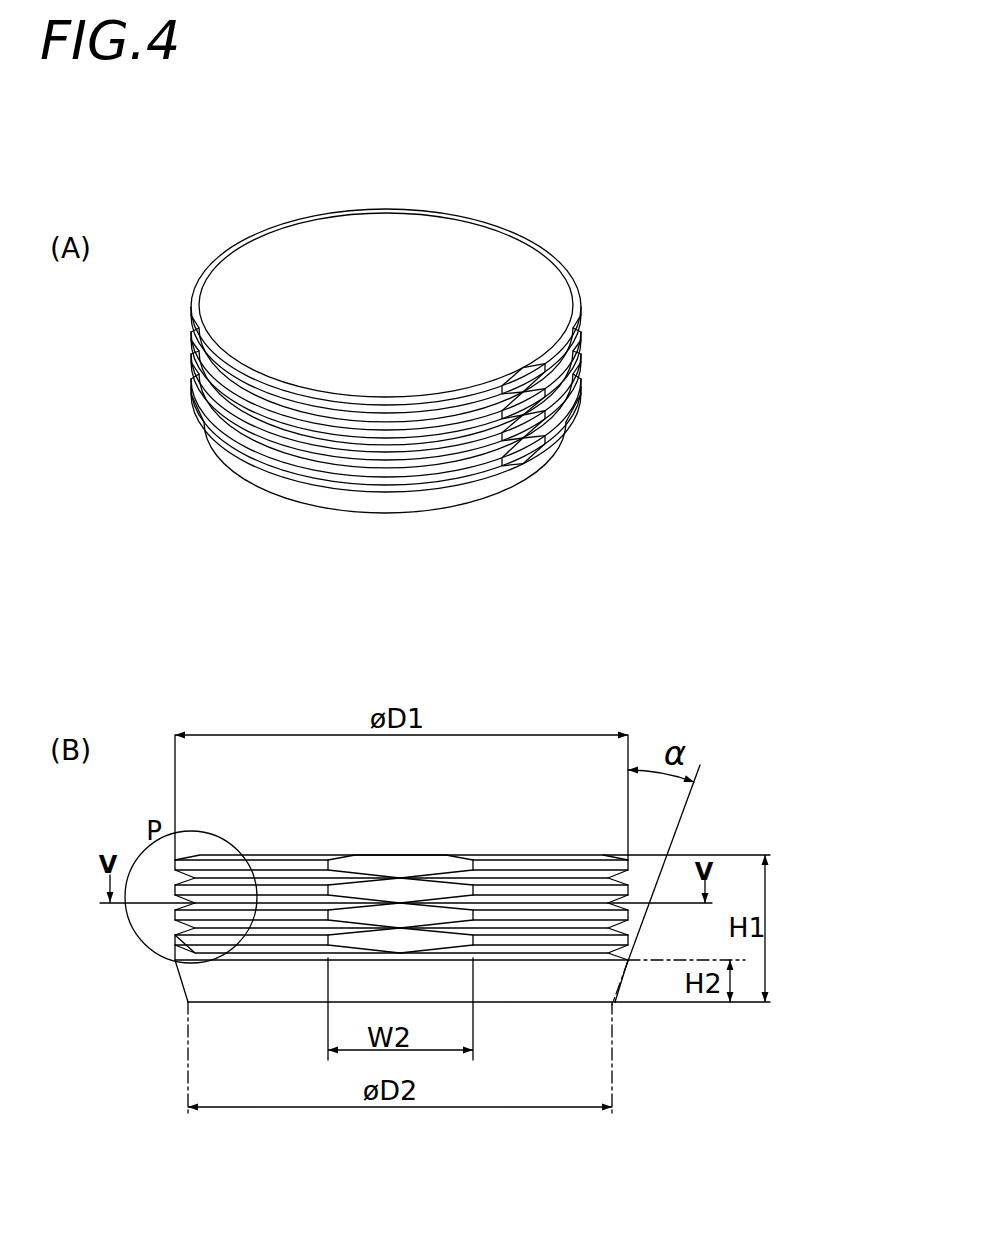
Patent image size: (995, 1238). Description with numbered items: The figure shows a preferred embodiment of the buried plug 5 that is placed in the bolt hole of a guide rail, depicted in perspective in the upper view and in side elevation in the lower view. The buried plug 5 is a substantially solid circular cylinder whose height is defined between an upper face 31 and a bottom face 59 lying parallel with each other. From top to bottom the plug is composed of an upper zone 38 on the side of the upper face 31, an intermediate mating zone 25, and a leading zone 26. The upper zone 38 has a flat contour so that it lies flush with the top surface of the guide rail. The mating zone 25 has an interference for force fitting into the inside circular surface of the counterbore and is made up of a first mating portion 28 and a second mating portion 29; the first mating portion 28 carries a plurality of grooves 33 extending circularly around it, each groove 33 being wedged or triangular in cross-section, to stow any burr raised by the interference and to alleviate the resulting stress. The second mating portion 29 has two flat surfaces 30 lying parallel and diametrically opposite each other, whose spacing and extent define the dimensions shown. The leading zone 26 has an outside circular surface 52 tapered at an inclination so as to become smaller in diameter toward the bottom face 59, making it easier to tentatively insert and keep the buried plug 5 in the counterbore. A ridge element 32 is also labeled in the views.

The buried plug 5 is at (489, 213).
The mating zone 25 is at (253, 410).
The leading zone 26 is at (297, 494).
The first mating portion 28 is at (417, 447).
The second mating portion 29 is at (527, 430).
The flat surface 30 is at (528, 405).
The upper face 31 is at (318, 250).
The upper thread ridge 32 is at (353, 468).
The groove 33 is at (187, 950).
The upper zone 38 is at (576, 305).
The outside circular surface 52 is at (620, 983).
The bottom face 59 is at (453, 512).